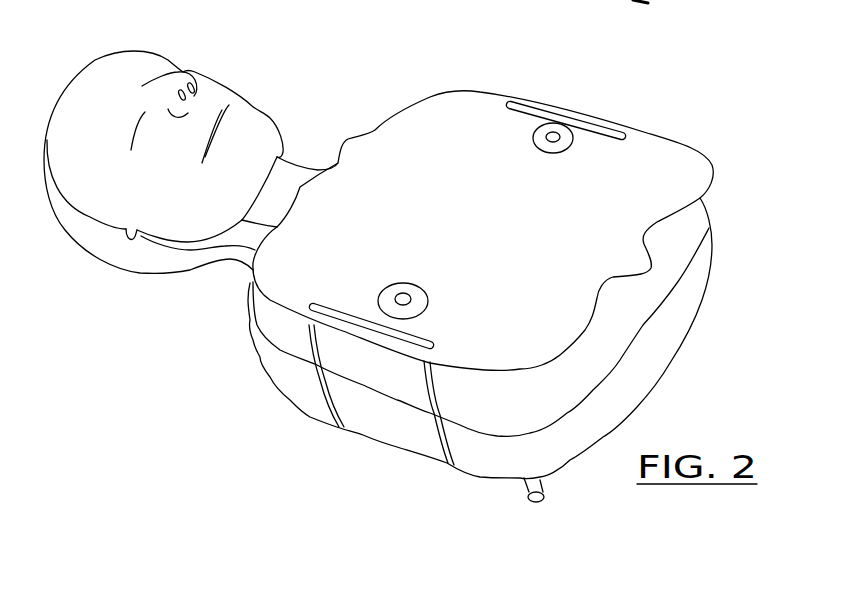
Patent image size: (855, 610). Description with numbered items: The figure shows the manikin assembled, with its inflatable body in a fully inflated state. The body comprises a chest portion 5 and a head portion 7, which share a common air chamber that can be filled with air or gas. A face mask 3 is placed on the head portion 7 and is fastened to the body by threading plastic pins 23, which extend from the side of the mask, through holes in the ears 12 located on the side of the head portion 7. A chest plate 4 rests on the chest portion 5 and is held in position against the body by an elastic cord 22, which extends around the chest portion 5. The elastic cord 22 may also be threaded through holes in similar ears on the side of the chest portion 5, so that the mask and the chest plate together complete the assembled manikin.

The face mask 3 is at (115, 66).
The chest plate 4 is at (443, 118).
The chest portion 5 is at (480, 455).
The head portion 7 is at (590, 318).
The ears 12 is at (125, 234).
The elastic cord 22 is at (305, 355).
The plastic pins 23 is at (133, 240).